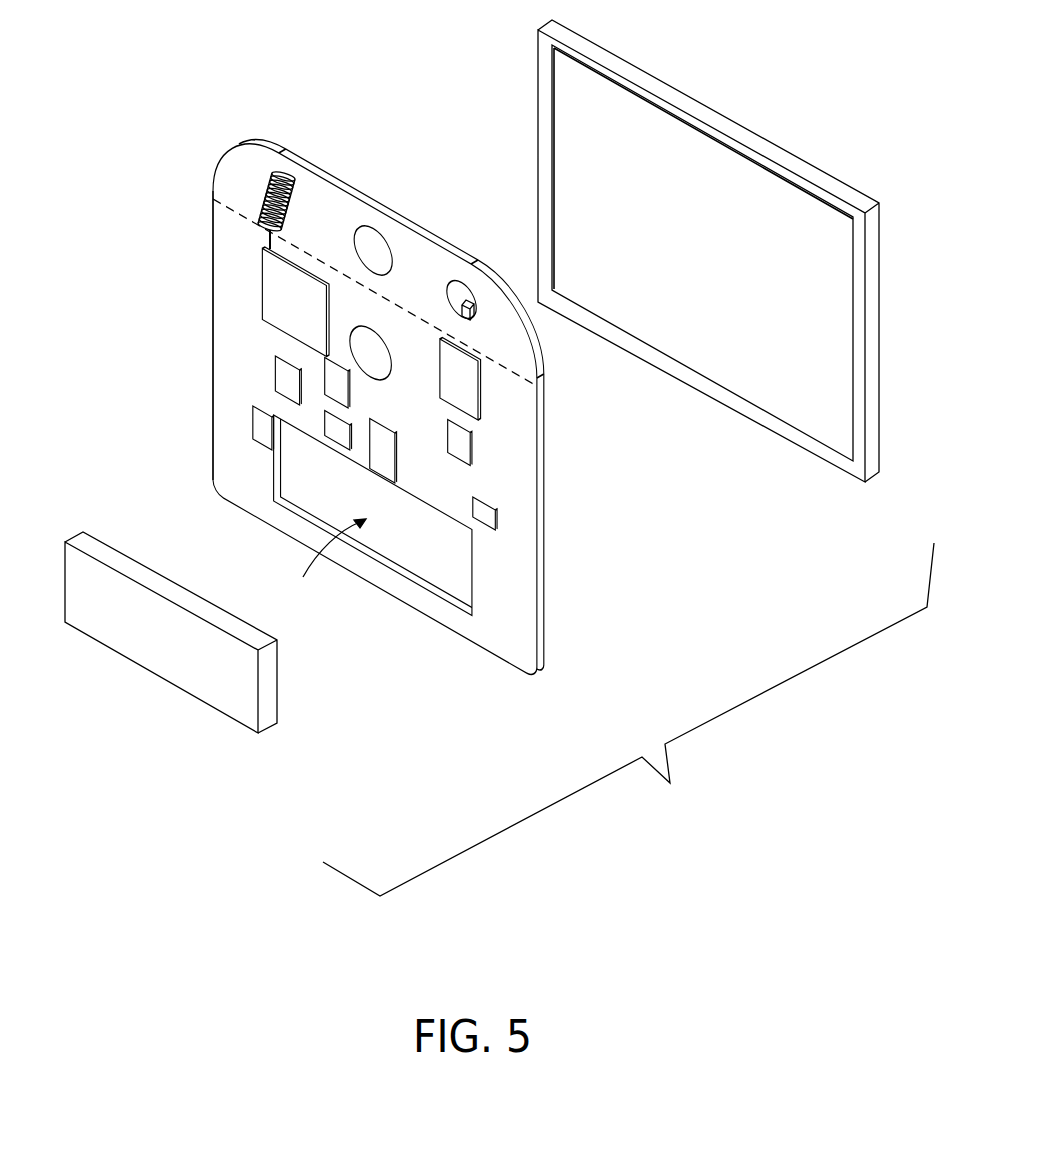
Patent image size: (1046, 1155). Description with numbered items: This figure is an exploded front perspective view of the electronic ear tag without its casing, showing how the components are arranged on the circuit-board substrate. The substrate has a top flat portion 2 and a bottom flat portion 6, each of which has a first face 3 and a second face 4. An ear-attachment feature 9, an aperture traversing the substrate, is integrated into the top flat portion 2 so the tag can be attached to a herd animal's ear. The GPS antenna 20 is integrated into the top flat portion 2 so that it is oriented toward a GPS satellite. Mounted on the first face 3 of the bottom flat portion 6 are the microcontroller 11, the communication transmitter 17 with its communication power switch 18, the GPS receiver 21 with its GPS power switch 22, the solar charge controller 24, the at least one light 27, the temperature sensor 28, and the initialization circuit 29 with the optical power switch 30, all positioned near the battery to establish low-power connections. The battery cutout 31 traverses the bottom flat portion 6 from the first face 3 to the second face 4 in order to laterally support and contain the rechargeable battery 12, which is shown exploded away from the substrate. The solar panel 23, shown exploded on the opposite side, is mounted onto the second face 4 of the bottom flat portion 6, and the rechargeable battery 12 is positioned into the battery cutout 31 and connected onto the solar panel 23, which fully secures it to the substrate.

The top flat portion 2 is at (218, 190).
The first face 3 is at (245, 283).
The second face 4 is at (420, 577).
The bottom flat portion 6 is at (213, 323).
The ear-attachment feature 9 is at (370, 255).
The microcontroller 11 is at (394, 457).
The rechargeable battery 12 is at (153, 663).
The communication transmitter 17 is at (284, 326).
The communication power switch 18 is at (277, 370).
The GPS antenna 20 is at (262, 212).
The GPS receiver 21 is at (478, 388).
The GPS power switch 22 is at (469, 441).
The solar panel 23 is at (563, 191).
The solar charge controller 24 is at (263, 441).
The at least one light 27 is at (485, 523).
The temperature sensor 28 is at (387, 358).
The initialization circuit 29 is at (346, 380).
The optical power switch 30 is at (333, 438).
The battery cutout 31 is at (328, 563).